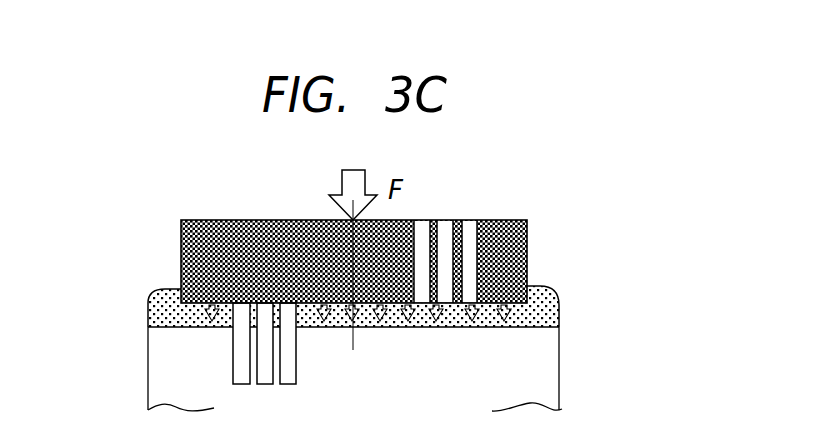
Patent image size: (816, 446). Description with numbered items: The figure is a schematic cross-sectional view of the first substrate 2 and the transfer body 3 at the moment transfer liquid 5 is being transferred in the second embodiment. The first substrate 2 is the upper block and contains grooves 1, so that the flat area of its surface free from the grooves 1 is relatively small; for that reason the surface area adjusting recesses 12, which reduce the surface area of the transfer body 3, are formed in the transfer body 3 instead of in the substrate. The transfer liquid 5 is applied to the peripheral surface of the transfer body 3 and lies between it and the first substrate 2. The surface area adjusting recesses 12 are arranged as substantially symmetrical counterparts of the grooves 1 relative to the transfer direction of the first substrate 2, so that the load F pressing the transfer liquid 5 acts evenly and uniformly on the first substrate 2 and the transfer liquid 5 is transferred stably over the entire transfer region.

The grooves 1 is at (472, 237).
The first substrate 2 is at (247, 232).
The transfer body 3 is at (546, 358).
The transfer liquid 5 is at (165, 303).
The surface area adjusting recesses 12 is at (237, 360).